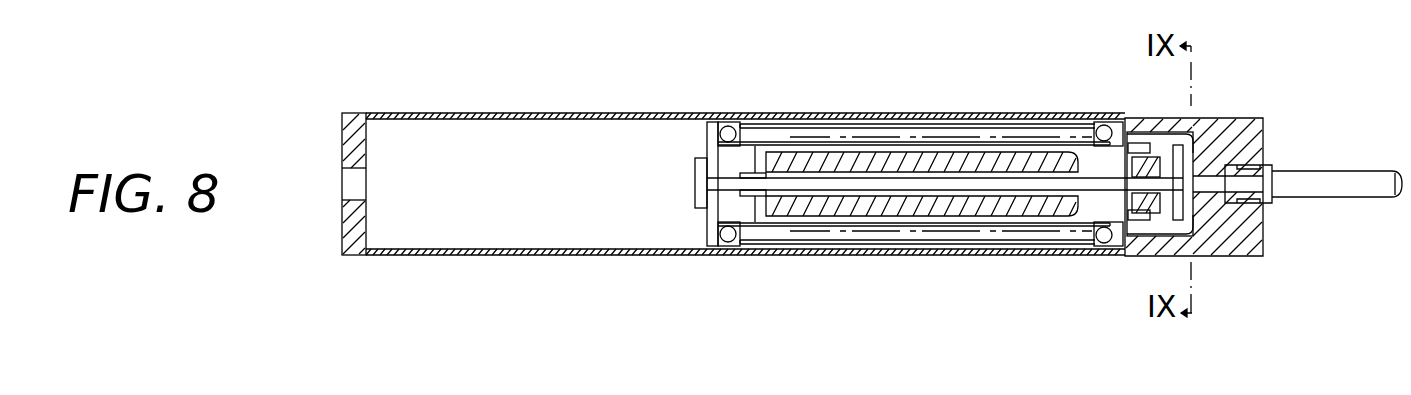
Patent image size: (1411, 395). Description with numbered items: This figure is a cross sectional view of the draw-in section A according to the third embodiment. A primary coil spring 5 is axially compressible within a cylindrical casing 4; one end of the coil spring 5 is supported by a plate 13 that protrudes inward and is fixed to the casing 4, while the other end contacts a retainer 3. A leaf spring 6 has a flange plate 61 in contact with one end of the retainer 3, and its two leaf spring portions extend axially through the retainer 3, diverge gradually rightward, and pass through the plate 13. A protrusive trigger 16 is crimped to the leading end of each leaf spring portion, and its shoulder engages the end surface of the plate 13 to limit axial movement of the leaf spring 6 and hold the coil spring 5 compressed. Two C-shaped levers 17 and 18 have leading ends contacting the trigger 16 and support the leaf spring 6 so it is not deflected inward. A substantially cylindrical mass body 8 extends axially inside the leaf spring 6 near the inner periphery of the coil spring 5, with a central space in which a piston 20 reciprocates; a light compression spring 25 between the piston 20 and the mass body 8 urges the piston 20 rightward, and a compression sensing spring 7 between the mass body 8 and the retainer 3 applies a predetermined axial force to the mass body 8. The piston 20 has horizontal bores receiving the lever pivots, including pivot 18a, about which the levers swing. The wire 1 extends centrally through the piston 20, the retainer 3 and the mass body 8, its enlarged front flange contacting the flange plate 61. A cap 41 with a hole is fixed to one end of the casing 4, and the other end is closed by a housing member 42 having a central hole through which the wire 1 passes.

The draw-in section A is at (487, 98).
The wire 1 is at (897, 192).
The retainer 3 is at (712, 250).
The cylindrical casing 4 is at (639, 112).
The primary coil spring 5 is at (958, 128).
The leaf spring 6 is at (757, 222).
The compression sensing spring 7 is at (748, 170).
The mass body 8 is at (858, 152).
The plate 13 is at (1112, 122).
The trigger 16 is at (1140, 236).
The C-shaped lever 17 is at (1192, 240).
The C-shaped lever 18 is at (1217, 120).
The pivot 18a is at (1200, 208).
The piston 20 is at (1089, 200).
The light compression spring 25 is at (1050, 257).
The cap 41 is at (346, 238).
The housing member 42 is at (1262, 248).
The flange plate 61 is at (704, 240).